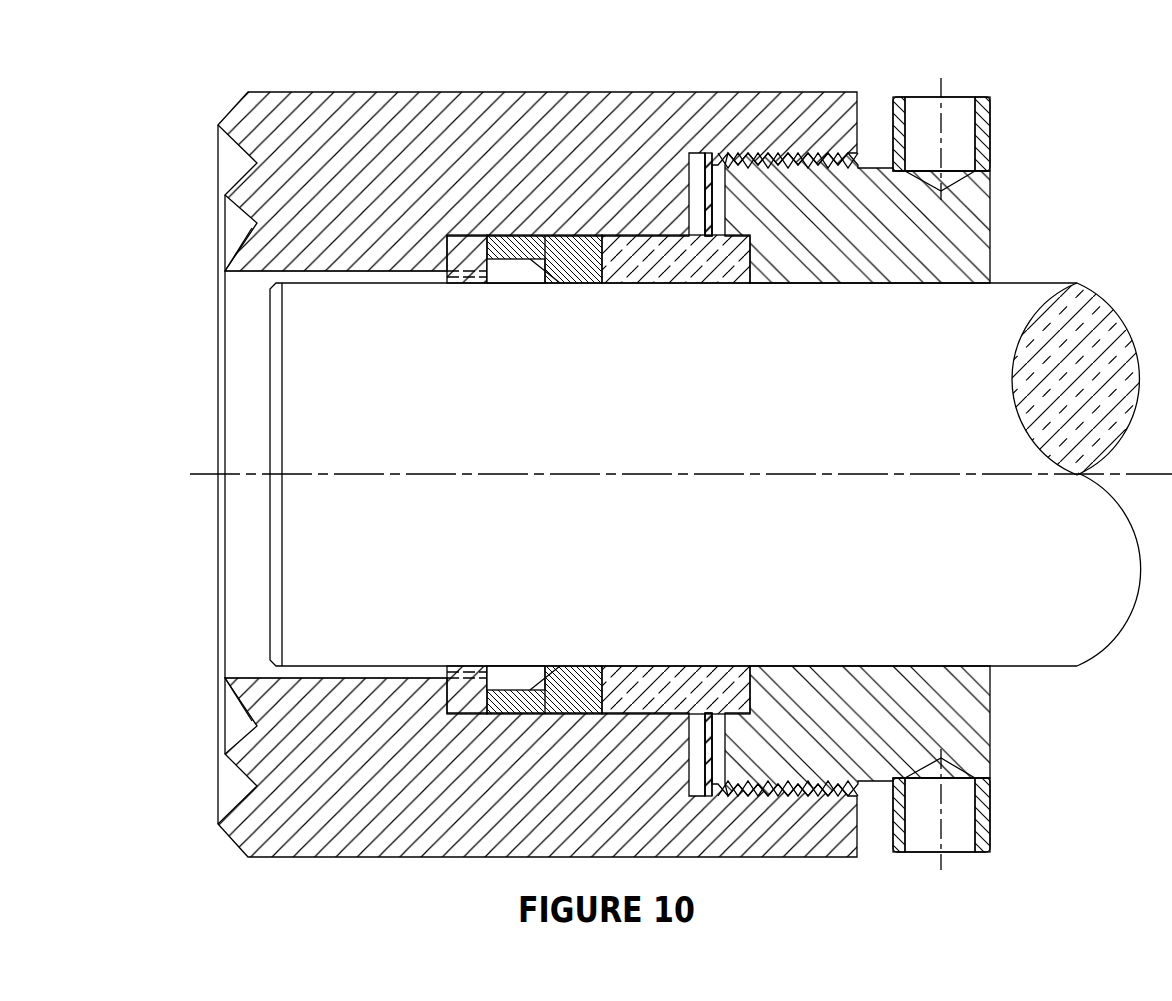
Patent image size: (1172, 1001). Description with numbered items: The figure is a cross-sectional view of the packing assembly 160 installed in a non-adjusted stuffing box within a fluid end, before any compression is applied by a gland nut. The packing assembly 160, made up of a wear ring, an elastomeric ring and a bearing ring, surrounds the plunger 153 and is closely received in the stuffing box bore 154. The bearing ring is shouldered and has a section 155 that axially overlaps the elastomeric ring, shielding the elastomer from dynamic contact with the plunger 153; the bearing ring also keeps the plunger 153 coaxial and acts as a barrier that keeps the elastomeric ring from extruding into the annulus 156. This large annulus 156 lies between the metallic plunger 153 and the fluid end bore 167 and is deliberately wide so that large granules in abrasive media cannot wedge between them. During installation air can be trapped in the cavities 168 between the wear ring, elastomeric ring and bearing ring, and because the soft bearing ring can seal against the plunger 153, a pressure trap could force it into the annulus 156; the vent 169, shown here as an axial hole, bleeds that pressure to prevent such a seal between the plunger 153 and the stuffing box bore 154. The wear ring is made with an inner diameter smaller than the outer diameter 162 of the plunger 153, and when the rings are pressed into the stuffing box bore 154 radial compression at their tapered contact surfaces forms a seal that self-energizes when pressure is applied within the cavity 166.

The plunger 153 is at (1017, 303).
The stuffing box bore 154 is at (503, 262).
The section 155 is at (533, 187).
The annulus 156 is at (343, 277).
The packing assembly 160 is at (540, 273).
The outer diameter 162 is at (998, 282).
The cavity 166 is at (247, 393).
The fluid end bore 167 is at (248, 677).
The cavities 168 is at (598, 178).
The vent 169 is at (465, 277).